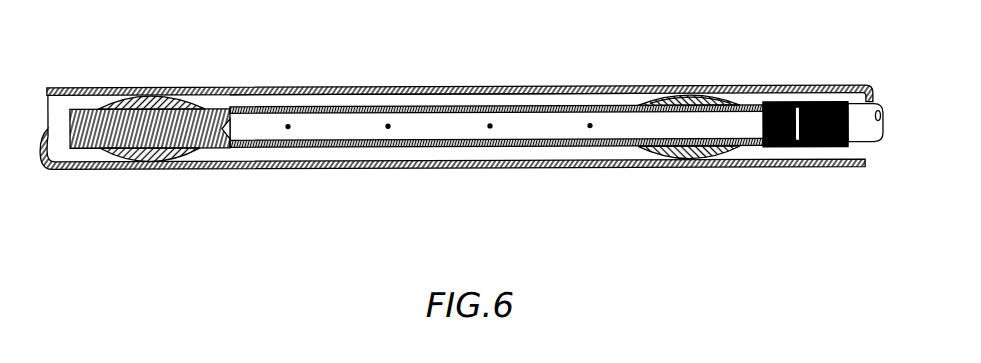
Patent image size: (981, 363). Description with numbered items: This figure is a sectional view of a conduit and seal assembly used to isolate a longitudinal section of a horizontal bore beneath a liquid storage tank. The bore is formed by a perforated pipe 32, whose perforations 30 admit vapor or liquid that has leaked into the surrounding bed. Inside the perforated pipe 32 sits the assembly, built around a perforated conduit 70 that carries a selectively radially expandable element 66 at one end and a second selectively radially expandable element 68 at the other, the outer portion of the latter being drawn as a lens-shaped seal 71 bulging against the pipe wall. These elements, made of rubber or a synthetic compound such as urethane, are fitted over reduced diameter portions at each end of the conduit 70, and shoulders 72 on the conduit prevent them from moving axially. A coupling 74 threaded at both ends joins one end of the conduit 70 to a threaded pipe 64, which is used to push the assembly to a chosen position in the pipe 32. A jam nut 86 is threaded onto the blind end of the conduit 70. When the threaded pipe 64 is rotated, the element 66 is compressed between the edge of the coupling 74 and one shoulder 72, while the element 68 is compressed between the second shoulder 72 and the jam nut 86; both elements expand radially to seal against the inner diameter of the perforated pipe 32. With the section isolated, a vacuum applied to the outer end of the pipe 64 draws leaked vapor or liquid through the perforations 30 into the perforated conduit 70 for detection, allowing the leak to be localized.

The perforations 30 is at (460, 87).
The perforated pipe 32 is at (368, 87).
The threaded pipe 64 is at (873, 143).
The selectively radially expandable element 66 is at (690, 158).
The selectively radially expandable element 68 is at (150, 163).
The perforated conduit 70 is at (423, 146).
The left packer element 71 is at (173, 88).
The shoulder 72 is at (663, 94).
The coupling 74 is at (787, 148).
The jam nut 86 is at (92, 150).